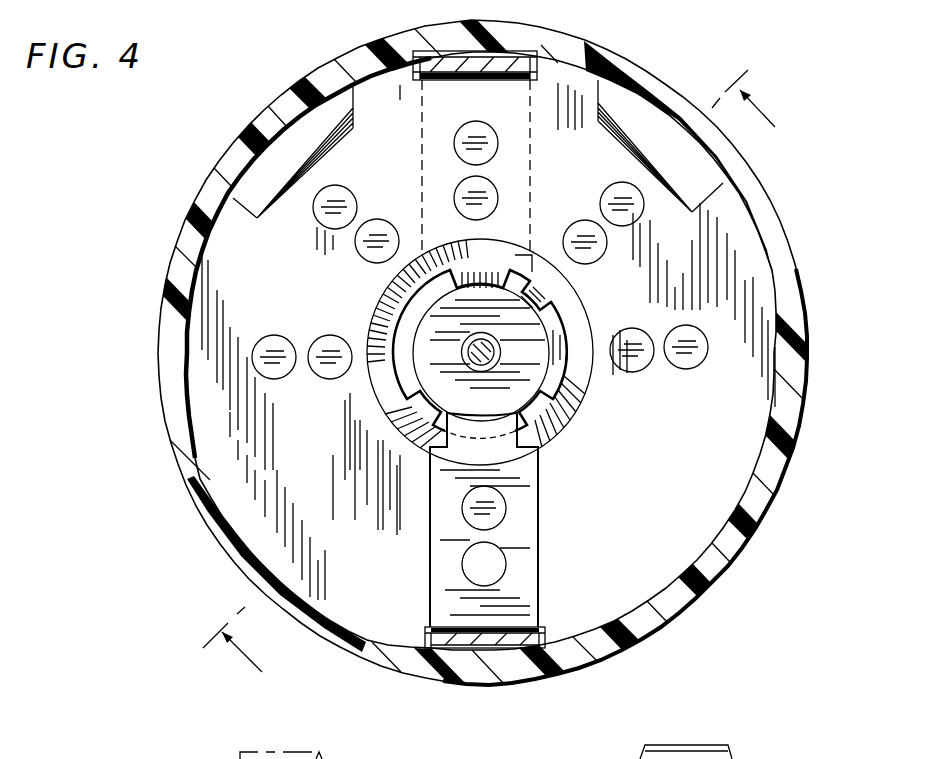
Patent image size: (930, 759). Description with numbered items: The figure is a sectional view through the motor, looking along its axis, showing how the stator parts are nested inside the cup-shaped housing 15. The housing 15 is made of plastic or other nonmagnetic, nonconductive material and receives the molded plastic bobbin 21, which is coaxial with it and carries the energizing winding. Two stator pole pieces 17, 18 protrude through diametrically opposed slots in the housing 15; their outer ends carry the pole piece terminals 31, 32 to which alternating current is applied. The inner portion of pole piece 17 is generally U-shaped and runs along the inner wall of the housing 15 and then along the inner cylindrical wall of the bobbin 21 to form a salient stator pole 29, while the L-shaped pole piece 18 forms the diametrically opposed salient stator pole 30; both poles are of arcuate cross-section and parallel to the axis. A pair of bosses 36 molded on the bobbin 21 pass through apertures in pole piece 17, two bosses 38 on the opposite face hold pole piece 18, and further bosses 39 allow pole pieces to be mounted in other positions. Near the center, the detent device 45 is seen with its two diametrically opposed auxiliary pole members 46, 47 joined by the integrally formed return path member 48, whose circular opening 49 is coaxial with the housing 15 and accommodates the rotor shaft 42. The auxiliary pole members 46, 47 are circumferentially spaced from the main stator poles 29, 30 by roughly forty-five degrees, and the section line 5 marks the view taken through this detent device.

The housing 15 is at (718, 575).
The bobbin 21 is at (762, 421).
The stator pole piece 17 is at (447, 52).
The pole piece terminal 31 is at (452, 80).
The bosses 36 is at (466, 152).
The further bosses 39 is at (330, 378).
The bosses 38 is at (496, 526).
The salient stator pole 29 is at (497, 262).
The return path member 48 is at (392, 340).
The auxiliary pole member 46 is at (540, 292).
The shaft 42 is at (492, 364).
The circular opening 49 is at (467, 353).
The detent device 45 is at (540, 428).
The auxiliary pole member 47 is at (444, 405).
The salient stator pole 30 is at (538, 440).
The pole piece terminal 32 is at (455, 627).
The stator pole piece 18 is at (508, 655).
The section line 5- 5 is at (497, 379).